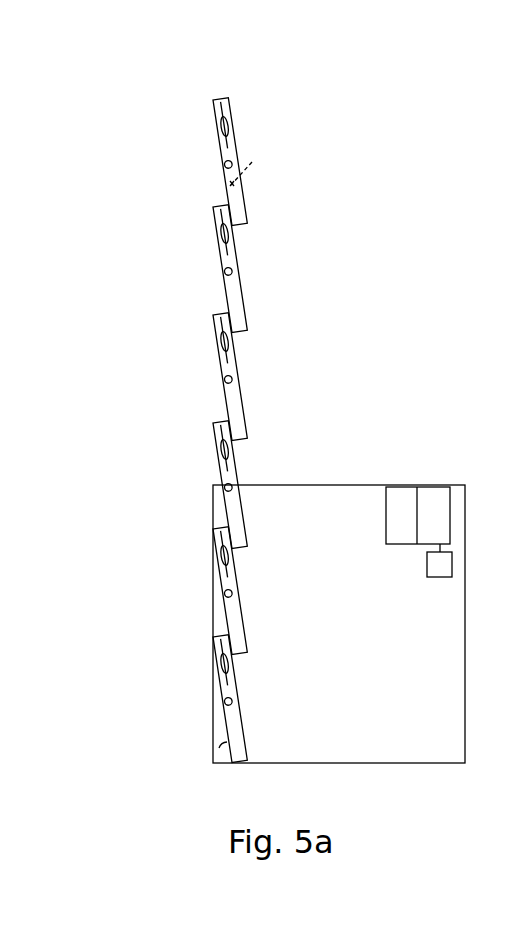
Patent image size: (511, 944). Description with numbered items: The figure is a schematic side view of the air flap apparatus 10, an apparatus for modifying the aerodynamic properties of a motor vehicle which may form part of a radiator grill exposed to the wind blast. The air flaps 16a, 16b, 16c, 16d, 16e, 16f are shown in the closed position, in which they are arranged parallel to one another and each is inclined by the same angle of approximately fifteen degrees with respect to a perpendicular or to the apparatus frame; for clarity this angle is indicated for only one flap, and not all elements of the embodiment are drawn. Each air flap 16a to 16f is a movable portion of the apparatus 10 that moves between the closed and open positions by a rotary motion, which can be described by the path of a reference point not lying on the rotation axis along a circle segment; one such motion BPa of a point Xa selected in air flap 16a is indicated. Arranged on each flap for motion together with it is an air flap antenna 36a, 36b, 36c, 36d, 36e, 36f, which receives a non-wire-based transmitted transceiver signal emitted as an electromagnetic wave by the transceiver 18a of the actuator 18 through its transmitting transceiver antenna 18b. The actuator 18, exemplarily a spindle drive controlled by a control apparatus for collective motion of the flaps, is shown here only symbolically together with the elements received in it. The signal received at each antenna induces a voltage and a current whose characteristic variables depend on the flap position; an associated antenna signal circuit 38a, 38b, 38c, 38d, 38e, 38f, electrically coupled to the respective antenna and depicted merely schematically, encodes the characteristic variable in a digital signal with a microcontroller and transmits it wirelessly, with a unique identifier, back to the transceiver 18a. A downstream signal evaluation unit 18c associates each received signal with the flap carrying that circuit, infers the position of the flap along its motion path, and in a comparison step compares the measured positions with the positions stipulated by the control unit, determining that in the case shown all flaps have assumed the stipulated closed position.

The air flap apparatus 10 is at (170, 97).
The air flap 16a is at (227, 101).
The air flap 16b is at (227, 208).
The air flap 16c is at (227, 316).
The air flap 16d is at (227, 424).
The air flap 16e is at (227, 530).
The air flap 16f is at (227, 638).
The antenna signal circuit 38a is at (229, 124).
The antenna signal circuit 38b is at (229, 231).
The antenna signal circuit 38c is at (229, 339).
The antenna signal circuit 38d is at (229, 447).
The antenna signal circuit 38e is at (229, 553).
The antenna signal circuit 38f is at (229, 661).
The air flap antenna 36a is at (233, 142).
The air flap antenna 36b is at (233, 249).
The air flap antenna 36c is at (233, 357).
The air flap antenna 36d is at (233, 465).
The air flap antenna 36e is at (233, 571).
The air flap antenna 36f is at (233, 679).
The actuator 18 is at (403, 716).
The transceiver 18a is at (449, 503).
The transmitting transceiver antenna 18b is at (416, 504).
The signal evaluation unit 18c is at (445, 558).
The pivot pin D is at (224, 167).
The point Xa is at (232, 184).
The motion BPa is at (248, 172).